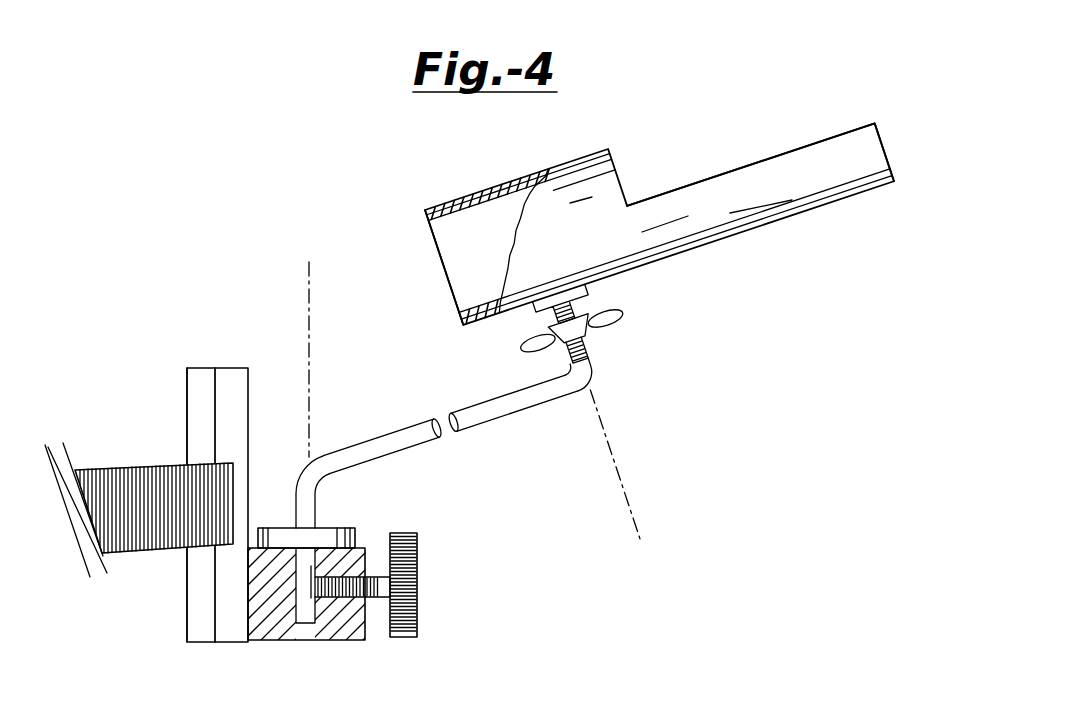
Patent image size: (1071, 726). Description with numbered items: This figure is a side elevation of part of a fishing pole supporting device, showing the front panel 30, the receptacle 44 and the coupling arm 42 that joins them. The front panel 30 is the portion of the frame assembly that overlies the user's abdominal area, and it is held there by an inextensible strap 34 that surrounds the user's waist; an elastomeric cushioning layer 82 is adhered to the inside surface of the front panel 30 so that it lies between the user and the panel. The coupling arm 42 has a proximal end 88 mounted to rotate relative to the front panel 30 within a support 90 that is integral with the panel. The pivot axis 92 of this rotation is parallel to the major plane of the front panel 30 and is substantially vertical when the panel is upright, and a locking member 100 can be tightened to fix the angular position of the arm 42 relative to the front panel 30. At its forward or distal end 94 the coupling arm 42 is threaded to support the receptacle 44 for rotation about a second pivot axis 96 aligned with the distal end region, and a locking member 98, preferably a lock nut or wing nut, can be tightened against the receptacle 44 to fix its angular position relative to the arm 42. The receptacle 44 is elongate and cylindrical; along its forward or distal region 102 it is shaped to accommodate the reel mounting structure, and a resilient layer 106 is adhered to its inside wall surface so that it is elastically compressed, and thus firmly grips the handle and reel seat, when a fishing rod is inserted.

The front panel 30 is at (248, 430).
The strap 34 is at (140, 551).
The coupling arm 42 is at (368, 440).
The receptacle 44 is at (630, 192).
The elastomeric cushioning layer 82 is at (187, 402).
The proximal end 88 is at (317, 505).
The support 90 is at (330, 642).
The pivot axis 92 is at (308, 287).
The distal end 94 is at (592, 357).
The pivot axis 96 is at (637, 522).
The locking member 98 is at (622, 322).
The locking member 100 is at (417, 593).
The distal region 102 is at (882, 142).
The resilient layer 106 is at (438, 257).